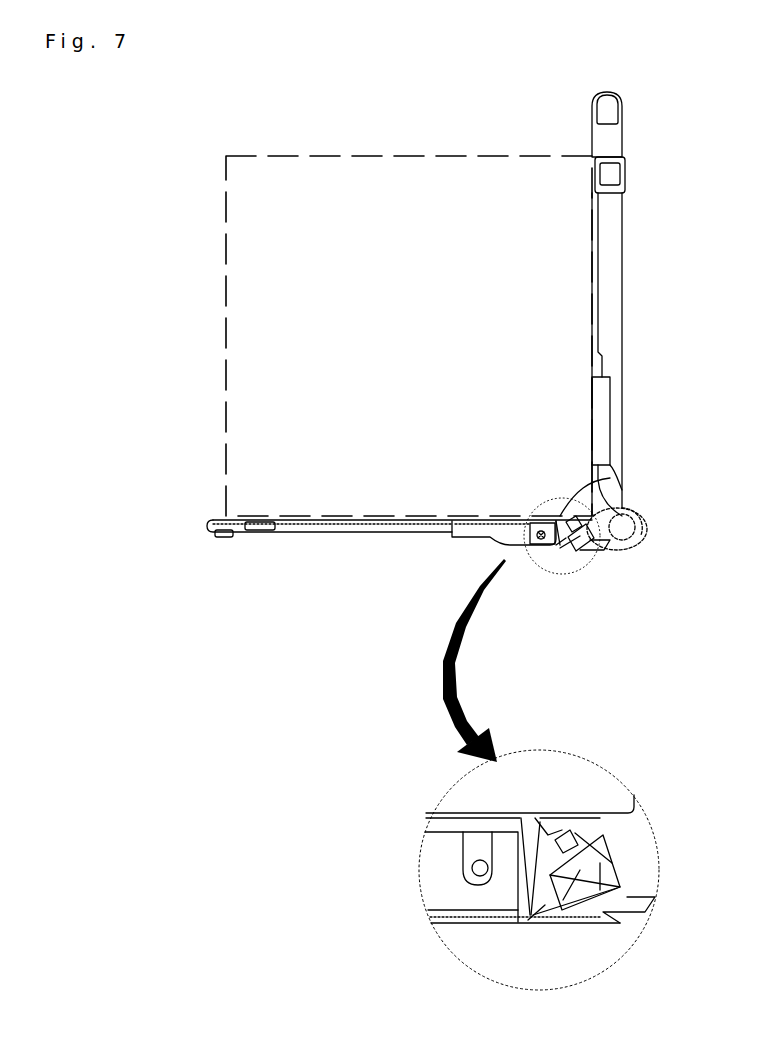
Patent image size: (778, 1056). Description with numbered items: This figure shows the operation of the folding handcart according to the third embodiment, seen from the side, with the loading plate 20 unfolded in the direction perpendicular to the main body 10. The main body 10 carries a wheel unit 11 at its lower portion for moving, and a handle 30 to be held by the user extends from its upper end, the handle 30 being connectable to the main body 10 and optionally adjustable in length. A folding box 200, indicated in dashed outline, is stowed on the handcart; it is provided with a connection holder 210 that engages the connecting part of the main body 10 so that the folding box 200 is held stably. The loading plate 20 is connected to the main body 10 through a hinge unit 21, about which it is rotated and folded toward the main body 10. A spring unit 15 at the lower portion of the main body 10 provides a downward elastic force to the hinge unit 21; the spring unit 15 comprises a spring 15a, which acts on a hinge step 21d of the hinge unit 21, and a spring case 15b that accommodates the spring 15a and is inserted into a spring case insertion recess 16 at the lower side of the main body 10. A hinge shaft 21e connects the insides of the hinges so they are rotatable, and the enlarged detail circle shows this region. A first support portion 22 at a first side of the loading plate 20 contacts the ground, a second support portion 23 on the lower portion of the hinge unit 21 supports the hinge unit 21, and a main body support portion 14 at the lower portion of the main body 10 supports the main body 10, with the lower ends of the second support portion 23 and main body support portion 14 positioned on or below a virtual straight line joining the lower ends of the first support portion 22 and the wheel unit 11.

The folding box 200 is at (226, 400).
The handle 30 is at (625, 129).
The main body 10 is at (626, 477).
The connection holder 210 is at (610, 410).
The wheel unit 11 is at (648, 527).
The loading plate 20 is at (322, 528).
The first support portion 22 is at (218, 533).
The hinge unit 21 is at (537, 518).
The hinge step 21d is at (550, 545).
The hinge shaft 21e is at (537, 535).
The spring case insertion recess 16 is at (592, 533).
The spring 15a is at (588, 544).
The main body support portion 14 is at (582, 548).
The spring unit 15 is at (570, 553).
The spring case 15b is at (557, 550).
The second support portion 23 is at (465, 915).